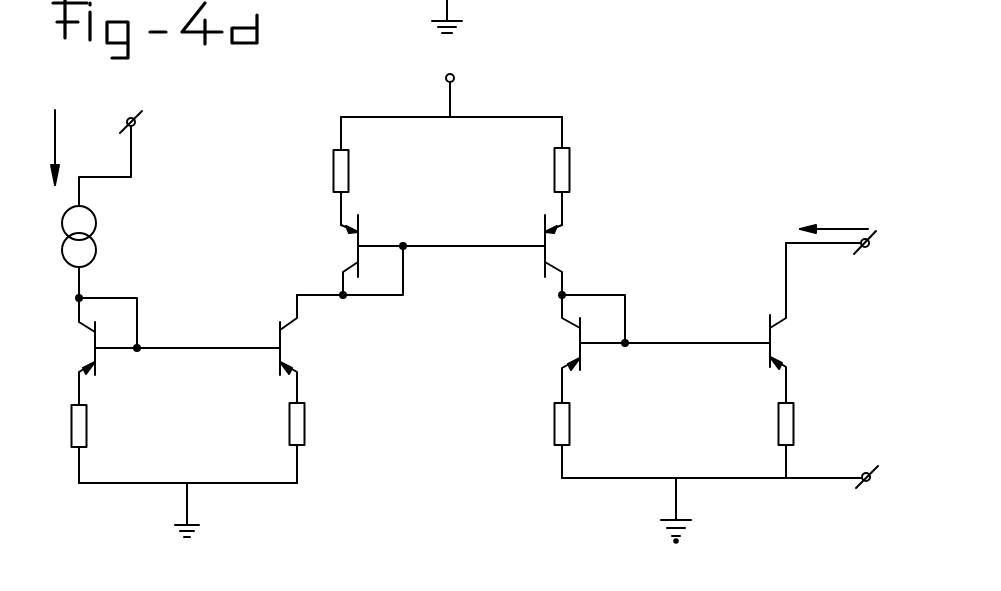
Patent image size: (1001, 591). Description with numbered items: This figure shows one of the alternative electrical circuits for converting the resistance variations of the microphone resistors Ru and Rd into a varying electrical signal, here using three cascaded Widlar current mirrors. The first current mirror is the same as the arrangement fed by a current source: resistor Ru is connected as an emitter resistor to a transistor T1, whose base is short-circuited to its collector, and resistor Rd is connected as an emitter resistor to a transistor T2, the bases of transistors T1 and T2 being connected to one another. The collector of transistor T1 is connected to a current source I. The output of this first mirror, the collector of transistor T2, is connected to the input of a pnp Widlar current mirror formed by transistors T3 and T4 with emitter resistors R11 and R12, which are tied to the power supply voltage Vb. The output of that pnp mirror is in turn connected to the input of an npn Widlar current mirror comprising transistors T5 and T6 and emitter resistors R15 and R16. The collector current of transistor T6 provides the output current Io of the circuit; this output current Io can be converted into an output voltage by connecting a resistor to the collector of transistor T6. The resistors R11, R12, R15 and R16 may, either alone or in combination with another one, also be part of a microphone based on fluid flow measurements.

The transistor T1 is at (78, 351).
The transistor T2 is at (301, 349).
The transistor T3 is at (338, 255).
The transistor T4 is at (566, 255).
The transistor T5 is at (560, 349).
The transistor T6 is at (790, 323).
The resistor R11 is at (321, 171).
The resistor R12 is at (589, 171).
The resistor R15 is at (539, 440).
The resistor R16 is at (814, 440).
The resistor Ru is at (60, 444).
The resistor Rd is at (317, 443).
The current source I is at (85, 204).
The output current Io is at (831, 226).
The power supply voltage Vb is at (467, 91).